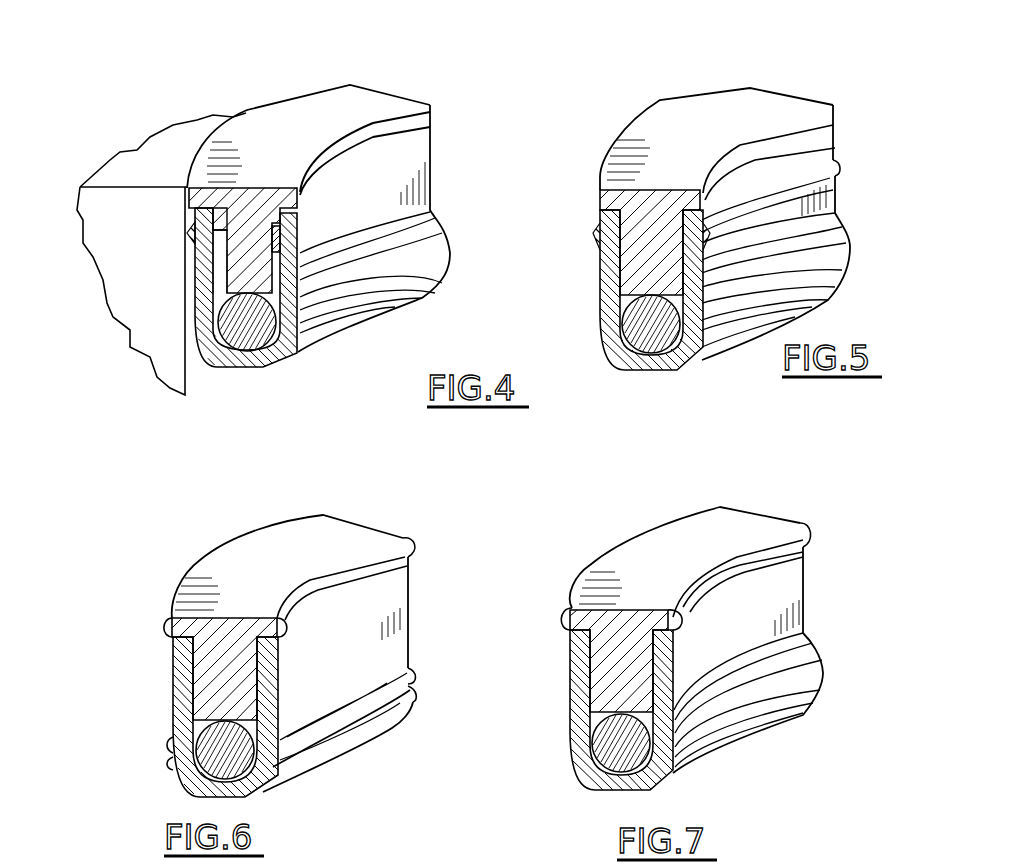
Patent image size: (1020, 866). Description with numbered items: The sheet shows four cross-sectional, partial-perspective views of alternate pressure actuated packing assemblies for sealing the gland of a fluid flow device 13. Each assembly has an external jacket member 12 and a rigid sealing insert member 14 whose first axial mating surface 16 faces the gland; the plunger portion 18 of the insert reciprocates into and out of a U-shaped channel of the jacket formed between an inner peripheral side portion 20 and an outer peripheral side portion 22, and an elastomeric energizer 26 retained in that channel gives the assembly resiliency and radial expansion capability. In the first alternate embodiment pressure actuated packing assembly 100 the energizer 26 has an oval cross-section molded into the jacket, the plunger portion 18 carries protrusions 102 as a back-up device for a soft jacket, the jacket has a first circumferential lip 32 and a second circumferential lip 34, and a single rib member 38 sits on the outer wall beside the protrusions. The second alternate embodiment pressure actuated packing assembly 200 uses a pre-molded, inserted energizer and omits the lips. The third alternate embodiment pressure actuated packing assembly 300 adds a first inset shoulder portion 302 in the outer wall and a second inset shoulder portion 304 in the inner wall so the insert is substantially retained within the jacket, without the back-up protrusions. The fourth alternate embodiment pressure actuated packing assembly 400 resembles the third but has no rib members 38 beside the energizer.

In FIG. 4, the jacket member 12 is at (437, 246).
In FIG. 5, the jacket member 12 is at (776, 232).
In FIG. 6, the jacket member 12 is at (172, 707).
In FIG. 7, the jacket member 12 is at (748, 660).
In FIG. 4, the fluid flow device 13 is at (143, 178).
In FIG. 4, the rigid sealing insert member 14 is at (285, 163).
In FIG. 5, the rigid sealing insert member 14 is at (757, 123).
In FIG. 6, the rigid sealing insert member 14 is at (336, 547).
In FIG. 7, the rigid sealing insert member 14 is at (698, 554).
In FIG. 4, the first axial mating surface 16 is at (314, 127).
In FIG. 5, the first axial mating surface 16 is at (691, 137).
In FIG. 6, the first axial mating surface 16 is at (276, 557).
In FIG. 7, the first axial mating surface 16 is at (712, 526).
In FIG. 4, the plunger portion 18 is at (197, 307).
In FIG. 5, the plunger portion 18 is at (646, 261).
In FIG. 6, the plunger portion 18 is at (224, 669).
In FIG. 7, the plunger portion 18 is at (619, 661).
In FIG. 6, the inner peripheral side portion 20 is at (374, 595).
In FIG. 4, the outer peripheral side portion 22 is at (197, 282).
In FIG. 5, the outer peripheral side portion 22 is at (598, 286).
In FIG. 6, the outer peripheral side portion 22 is at (172, 671).
In FIG. 7, the outer peripheral side portion 22 is at (568, 682).
In FIG. 4, the elastomeric energizer 26 is at (250, 336).
In FIG. 5, the elastomeric energizer 26 is at (659, 336).
In FIG. 6, the elastomeric energizer 26 is at (214, 762).
In FIG. 7, the elastomeric energizer 26 is at (588, 760).
In FIG. 4, the first circumferential lip 32 is at (217, 213).
In FIG. 4, the second circumferential lip 34 is at (305, 222).
In FIG. 4, the rib member 38 is at (197, 235).
In FIG. 5, the rib member 38 is at (838, 168).
In FIG. 6, the rib member 38 is at (416, 547).
In FIG. 7, the rib member 38 is at (817, 540).
In FIG. 4, the first alternate embodiment pressure actuated packing assembly 100 is at (270, 205).
In FIG. 4, the protrusions 102 is at (197, 250).
In FIG. 5, the second alternate embodiment pressure actuated packing assembly 200 is at (703, 209).
In FIG. 6, the third alternate embodiment pressure actuated packing assembly 300 is at (266, 648).
In FIG. 6, the first inset shoulder portion 302 is at (169, 637).
In FIG. 7, the first inset shoulder portion 302 is at (584, 619).
In FIG. 6, the second inset shoulder portion 304 is at (276, 637).
In FIG. 7, the second inset shoulder portion 304 is at (664, 611).
In FIG. 7, the fourth alternate embodiment pressure actuated packing assembly 400 is at (687, 664).